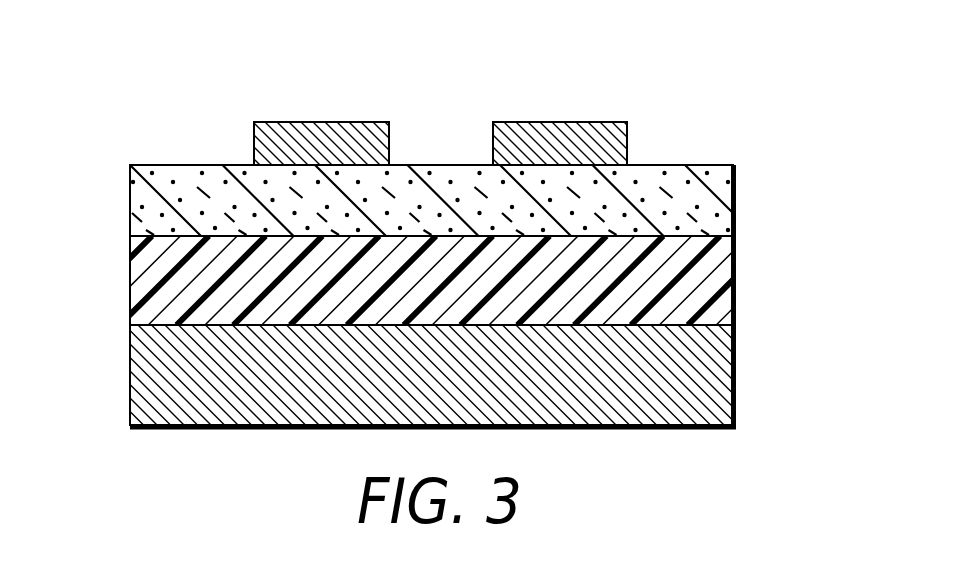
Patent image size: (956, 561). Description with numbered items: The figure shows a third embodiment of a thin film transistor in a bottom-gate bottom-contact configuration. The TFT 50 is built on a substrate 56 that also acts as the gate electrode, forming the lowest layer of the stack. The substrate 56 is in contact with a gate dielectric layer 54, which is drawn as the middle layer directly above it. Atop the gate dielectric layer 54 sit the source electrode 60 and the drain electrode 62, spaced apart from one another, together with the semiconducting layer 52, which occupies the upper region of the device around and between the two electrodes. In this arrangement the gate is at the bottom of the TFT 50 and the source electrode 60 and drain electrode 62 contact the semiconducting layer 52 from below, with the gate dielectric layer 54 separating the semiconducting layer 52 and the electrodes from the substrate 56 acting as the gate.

The TFT 50 is at (163, 73).
The semiconducting layer 52 is at (722, 200).
The gate dielectric layer 54 is at (122, 235).
The substrate 56 is at (727, 375).
The source electrode 60 is at (320, 122).
The drain electrode 62 is at (560, 122).